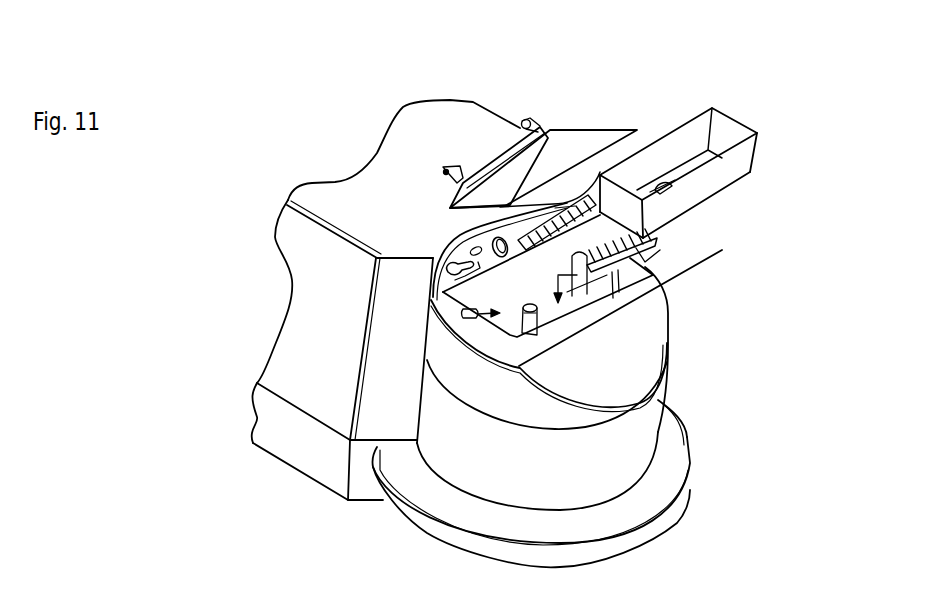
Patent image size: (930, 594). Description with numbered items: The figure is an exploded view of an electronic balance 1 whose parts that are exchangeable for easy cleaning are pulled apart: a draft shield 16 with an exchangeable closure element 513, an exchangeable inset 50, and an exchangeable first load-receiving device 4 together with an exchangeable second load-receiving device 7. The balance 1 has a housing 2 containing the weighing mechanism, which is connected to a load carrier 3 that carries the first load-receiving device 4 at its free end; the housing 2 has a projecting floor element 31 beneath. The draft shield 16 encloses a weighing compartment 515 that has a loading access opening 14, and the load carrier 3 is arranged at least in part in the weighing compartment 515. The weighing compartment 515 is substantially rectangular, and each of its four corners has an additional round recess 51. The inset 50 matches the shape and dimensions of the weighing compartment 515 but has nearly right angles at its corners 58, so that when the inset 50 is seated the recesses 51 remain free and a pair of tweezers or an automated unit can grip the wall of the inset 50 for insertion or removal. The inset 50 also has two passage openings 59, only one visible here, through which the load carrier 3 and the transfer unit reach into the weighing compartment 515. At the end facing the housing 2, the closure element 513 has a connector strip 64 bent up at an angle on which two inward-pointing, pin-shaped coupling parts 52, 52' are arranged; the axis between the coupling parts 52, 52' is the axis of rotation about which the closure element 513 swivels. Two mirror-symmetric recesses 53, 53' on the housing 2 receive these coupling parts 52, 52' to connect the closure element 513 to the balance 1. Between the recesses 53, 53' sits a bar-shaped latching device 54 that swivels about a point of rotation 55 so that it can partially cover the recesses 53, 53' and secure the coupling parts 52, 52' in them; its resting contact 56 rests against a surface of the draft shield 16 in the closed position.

The electronic balance 1 is at (305, 118).
The housing 2 is at (342, 350).
The load carrier 3 is at (522, 320).
The first load-receiving device 4 is at (650, 252).
The second load-receiving device 7 is at (578, 210).
The loading access opening 14 is at (465, 313).
The draft shield 16 is at (542, 356).
The floor element 31 is at (532, 483).
The inset 50 is at (698, 127).
The round recess 51 is at (505, 337).
The coupling part 52 is at (415, 101).
The coupling part 52' is at (511, 74).
The recess 53 is at (313, 259).
The recess 53' is at (557, 127).
The latching device 54 is at (470, 250).
The point of rotation 55 is at (493, 247).
The resting contact 56 is at (462, 280).
The corner 58 is at (713, 200).
The passage opening 59 is at (663, 177).
The connector strip 64 is at (503, 160).
The closure element 513 is at (583, 143).
The weighing compartment 515 is at (565, 296).